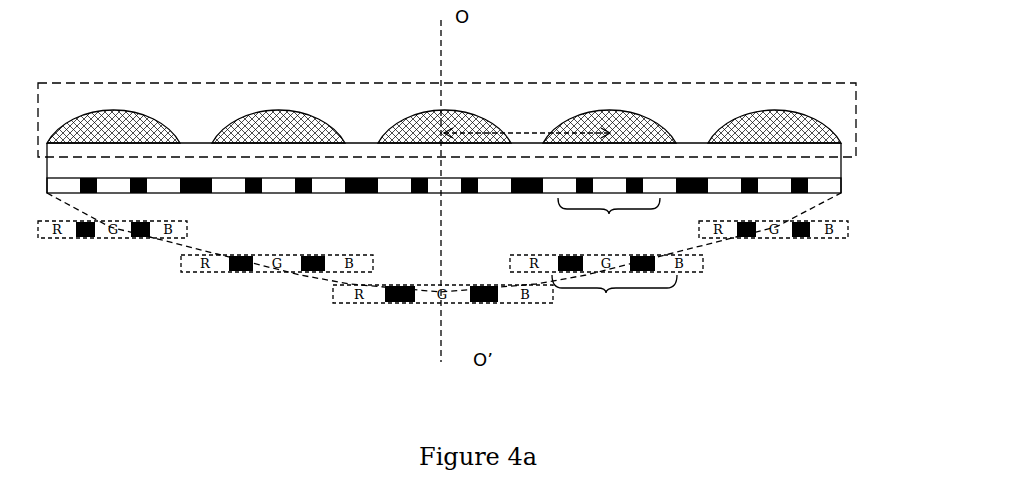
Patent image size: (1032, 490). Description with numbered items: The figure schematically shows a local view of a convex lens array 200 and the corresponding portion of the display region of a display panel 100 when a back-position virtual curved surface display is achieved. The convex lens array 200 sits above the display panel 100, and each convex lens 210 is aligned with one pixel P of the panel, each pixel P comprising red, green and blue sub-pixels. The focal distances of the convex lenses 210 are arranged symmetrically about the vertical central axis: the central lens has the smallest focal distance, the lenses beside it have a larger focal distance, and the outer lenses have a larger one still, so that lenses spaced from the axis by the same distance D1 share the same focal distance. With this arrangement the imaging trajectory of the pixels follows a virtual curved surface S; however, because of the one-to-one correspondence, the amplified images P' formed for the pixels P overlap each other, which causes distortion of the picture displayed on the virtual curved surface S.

The display panel 100 is at (841, 185).
The convex lens array 200 is at (473, 109).
The convex lens 210 is at (480, 117).
The distance from the vertical central axis D1 is at (527, 122).
The pixel P is at (609, 220).
The amplified image P' is at (614, 294).
The virtual curved surface S is at (702, 262).